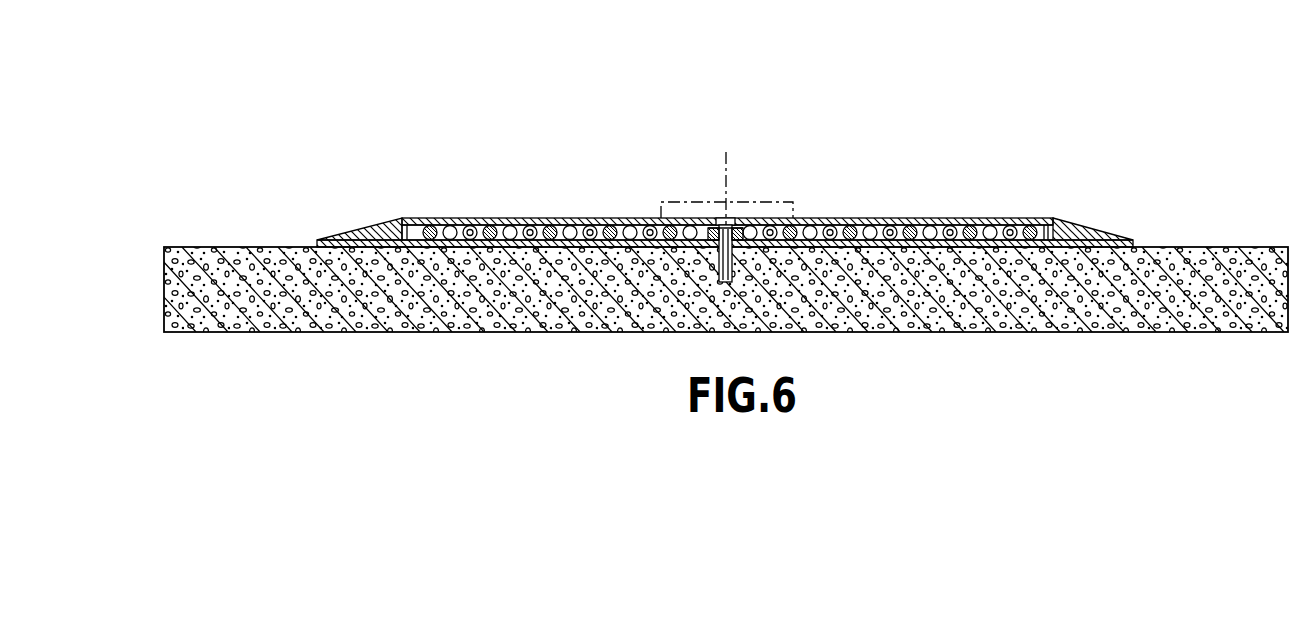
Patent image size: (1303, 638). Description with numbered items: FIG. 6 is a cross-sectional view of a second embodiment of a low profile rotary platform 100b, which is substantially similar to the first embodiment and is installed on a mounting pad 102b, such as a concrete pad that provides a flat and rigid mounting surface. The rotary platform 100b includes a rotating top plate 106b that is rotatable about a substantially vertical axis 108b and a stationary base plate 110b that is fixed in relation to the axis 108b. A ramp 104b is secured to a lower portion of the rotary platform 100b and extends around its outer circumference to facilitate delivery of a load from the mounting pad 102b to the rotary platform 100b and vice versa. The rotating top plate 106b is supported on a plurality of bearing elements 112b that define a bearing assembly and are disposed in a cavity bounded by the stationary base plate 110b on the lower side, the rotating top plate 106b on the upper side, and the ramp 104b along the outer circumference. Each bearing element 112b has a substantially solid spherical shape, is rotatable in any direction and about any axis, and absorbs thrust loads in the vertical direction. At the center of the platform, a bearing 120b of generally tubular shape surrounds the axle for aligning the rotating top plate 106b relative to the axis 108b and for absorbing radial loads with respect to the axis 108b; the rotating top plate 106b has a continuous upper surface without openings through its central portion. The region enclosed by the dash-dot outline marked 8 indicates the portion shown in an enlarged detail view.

The rotary platform 100b is at (975, 82).
The mounting pad 102b is at (174, 254).
The ramp 104b is at (351, 224).
The rotating top plate 106b is at (443, 228).
The axis 108b is at (727, 170).
The stationary base plate 110b is at (338, 240).
The bearing elements 112b is at (458, 228).
The bearing 120b is at (752, 224).
The detail region 8 is at (688, 198).